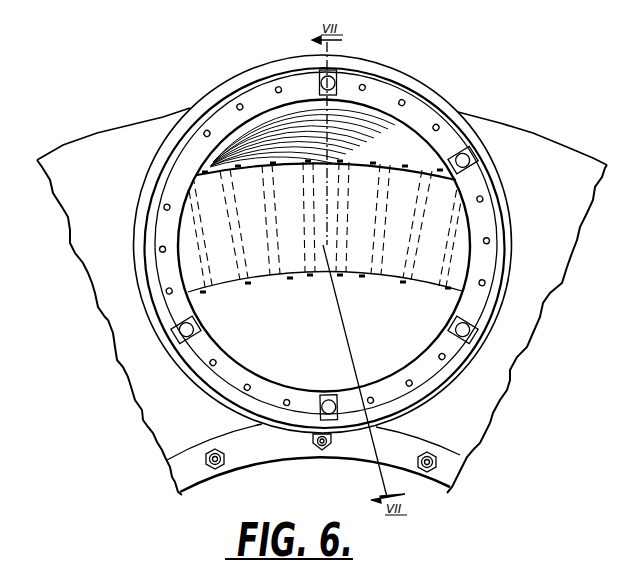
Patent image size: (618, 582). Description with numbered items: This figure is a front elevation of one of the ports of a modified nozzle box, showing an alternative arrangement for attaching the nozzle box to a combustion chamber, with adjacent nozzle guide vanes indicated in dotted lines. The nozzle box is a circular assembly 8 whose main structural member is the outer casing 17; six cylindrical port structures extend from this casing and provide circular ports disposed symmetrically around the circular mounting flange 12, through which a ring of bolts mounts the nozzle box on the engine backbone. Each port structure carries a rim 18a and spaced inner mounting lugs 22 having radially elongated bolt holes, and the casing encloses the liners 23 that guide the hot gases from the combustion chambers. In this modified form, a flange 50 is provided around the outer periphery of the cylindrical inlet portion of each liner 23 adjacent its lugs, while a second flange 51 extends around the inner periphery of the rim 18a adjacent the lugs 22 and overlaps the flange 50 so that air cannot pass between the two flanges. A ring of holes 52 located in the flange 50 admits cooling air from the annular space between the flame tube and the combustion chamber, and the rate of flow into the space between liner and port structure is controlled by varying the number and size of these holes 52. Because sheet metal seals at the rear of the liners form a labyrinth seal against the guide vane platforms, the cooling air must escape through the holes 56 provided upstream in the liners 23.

The circular assembly 8 is at (182, 85).
The circular mounting flange 12 is at (247, 458).
The outer casing 17 is at (550, 150).
The rim 18a is at (437, 100).
The inner mounting lugs 22 is at (339, 72).
The liners 23 is at (326, 222).
The flange 50 is at (175, 303).
The second flange 51 is at (157, 220).
The ring of holes 52 is at (283, 88).
The holes 56 is at (434, 170).